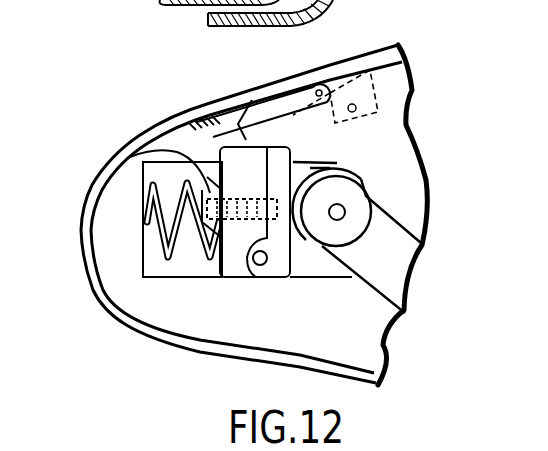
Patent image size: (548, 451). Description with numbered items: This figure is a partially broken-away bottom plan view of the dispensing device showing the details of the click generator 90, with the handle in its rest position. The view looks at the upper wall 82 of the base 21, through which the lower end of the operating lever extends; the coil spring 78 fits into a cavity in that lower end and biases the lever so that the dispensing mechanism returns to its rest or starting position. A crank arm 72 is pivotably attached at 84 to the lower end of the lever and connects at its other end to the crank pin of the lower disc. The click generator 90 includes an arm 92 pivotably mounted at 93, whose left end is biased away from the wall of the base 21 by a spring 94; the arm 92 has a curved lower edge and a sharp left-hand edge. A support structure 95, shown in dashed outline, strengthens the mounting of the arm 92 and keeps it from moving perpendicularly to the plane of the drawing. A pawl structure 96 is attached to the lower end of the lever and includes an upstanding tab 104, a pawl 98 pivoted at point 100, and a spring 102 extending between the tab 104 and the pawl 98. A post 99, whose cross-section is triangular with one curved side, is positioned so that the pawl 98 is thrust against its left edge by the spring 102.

The base 21 is at (88, 270).
The crank arm 72 is at (400, 262).
The coil spring 78 is at (170, 263).
The upper wall 82 is at (397, 99).
The pivot 84 is at (347, 210).
The click generator 90 is at (222, 85).
The arm 92 is at (264, 113).
The pivot mounting 93 is at (290, 77).
The spring 94 is at (193, 134).
The support structure 95 is at (370, 70).
The pawl structure 96 is at (223, 268).
The pawl 98 is at (297, 154).
The post 99 is at (340, 165).
The pivot point 100 is at (267, 260).
The spring 102 is at (247, 200).
The upstanding tab 104 is at (138, 143).